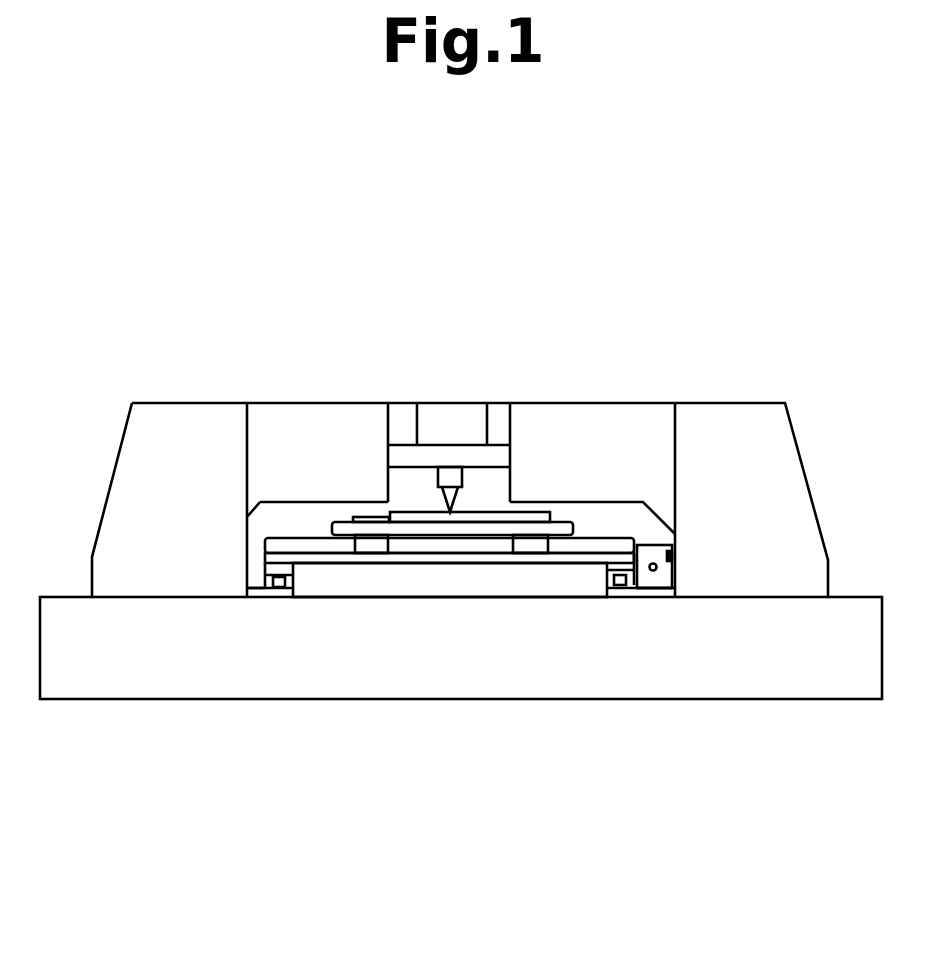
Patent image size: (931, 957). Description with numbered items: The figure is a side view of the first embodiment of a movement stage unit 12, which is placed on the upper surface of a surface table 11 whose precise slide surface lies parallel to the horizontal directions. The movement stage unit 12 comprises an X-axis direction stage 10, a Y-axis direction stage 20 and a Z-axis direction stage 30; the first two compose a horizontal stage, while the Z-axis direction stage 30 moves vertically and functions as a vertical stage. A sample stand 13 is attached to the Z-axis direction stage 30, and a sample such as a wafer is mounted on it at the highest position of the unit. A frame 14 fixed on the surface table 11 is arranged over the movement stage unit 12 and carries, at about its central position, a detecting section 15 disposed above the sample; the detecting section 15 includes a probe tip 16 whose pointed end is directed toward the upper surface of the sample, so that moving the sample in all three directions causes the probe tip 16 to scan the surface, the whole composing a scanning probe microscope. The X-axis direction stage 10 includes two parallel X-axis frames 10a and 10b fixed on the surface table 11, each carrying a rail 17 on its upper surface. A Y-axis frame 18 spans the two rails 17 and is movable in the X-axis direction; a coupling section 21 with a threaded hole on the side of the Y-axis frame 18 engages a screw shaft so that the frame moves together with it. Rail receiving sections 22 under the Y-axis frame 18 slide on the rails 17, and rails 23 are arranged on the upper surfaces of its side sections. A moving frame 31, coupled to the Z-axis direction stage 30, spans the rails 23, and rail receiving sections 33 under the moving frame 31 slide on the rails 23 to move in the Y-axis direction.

The X-axis direction stage 10 is at (590, 587).
The X-axis frame 10a is at (650, 592).
The X-axis frame 10b is at (258, 597).
The surface table 11 is at (112, 668).
The movement stage unit 12 is at (366, 499).
The sample stand 13 is at (487, 513).
The frame 14 is at (298, 433).
The detecting section 15 is at (450, 472).
The probe tip 16 is at (443, 493).
The rail 17 is at (282, 590).
The Y-axis frame 18 is at (277, 560).
The Y-axis direction stage 20 is at (333, 572).
The coupling section 21 is at (675, 565).
The rail receiving section 22 is at (617, 572).
The rail 23 is at (283, 543).
The Z-axis direction stage 30 is at (461, 582).
The moving frame 31 is at (559, 514).
The rail receiving section 33 is at (555, 550).